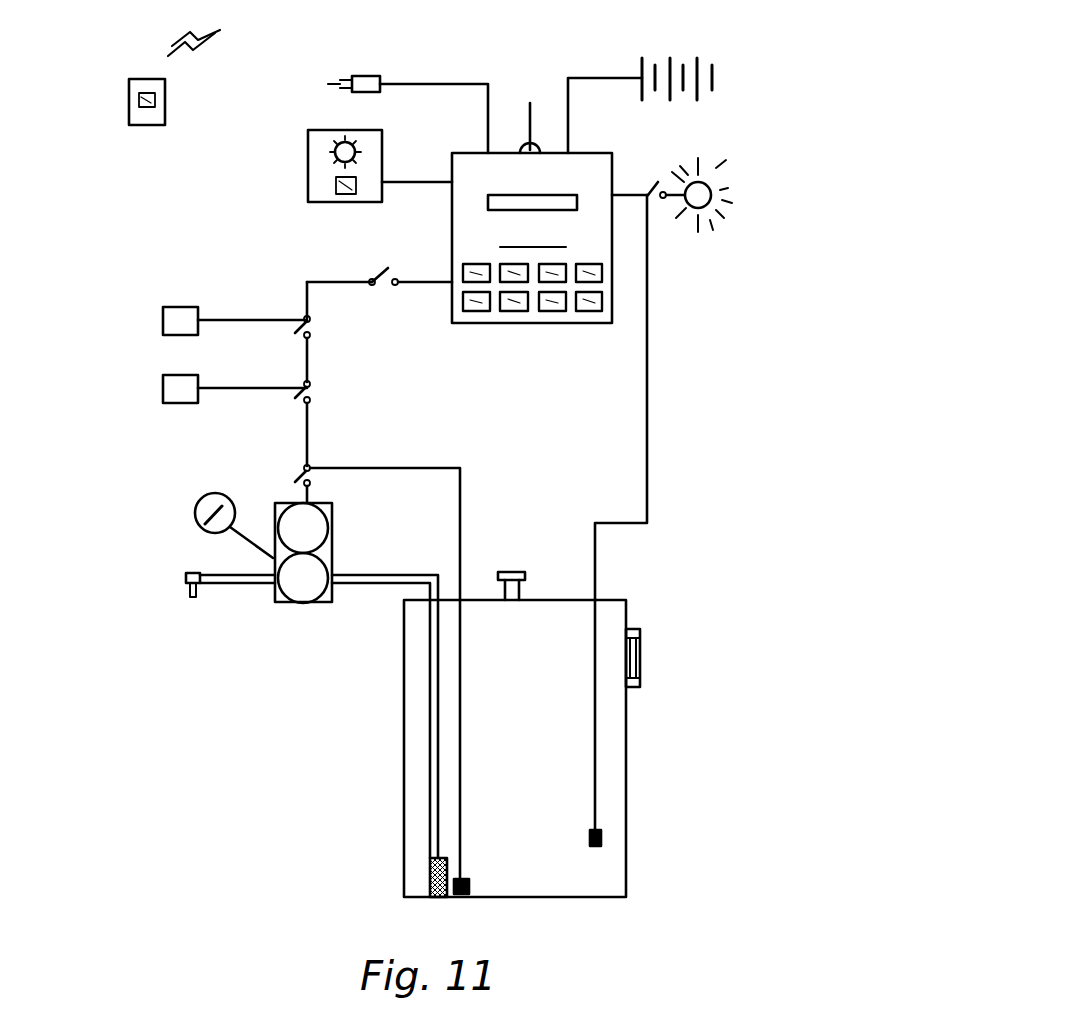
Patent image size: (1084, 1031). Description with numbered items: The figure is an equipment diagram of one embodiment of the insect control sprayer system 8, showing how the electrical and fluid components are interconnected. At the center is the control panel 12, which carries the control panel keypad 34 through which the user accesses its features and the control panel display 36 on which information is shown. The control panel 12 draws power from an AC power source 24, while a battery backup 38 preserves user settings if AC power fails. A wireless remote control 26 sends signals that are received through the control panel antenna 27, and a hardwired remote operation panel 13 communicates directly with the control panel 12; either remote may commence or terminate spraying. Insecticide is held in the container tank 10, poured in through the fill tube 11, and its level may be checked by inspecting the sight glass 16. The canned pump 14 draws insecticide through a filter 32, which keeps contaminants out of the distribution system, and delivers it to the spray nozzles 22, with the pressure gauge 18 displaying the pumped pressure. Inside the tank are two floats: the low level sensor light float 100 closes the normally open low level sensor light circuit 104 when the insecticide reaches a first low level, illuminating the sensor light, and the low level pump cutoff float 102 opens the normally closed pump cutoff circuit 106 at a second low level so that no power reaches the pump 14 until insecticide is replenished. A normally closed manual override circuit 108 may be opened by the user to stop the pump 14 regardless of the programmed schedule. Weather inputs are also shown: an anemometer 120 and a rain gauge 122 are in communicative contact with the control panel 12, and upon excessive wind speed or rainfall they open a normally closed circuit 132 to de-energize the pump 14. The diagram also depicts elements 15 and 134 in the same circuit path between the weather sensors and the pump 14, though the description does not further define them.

The insect control sprayer system 8 is at (840, 98).
The container tank 10 is at (540, 769).
The fill tube 11 is at (514, 571).
The control panel 12 is at (523, 317).
The hardwired remote operation panel 13 is at (296, 172).
The canned pump 14 is at (323, 568).
The fill line 15 is at (525, 578).
The sight glass 16 is at (712, 658).
The pressure gauge 18 is at (174, 525).
The spray nozzles 22 is at (291, 715).
The AC power source 24 is at (394, 99).
The wireless remote control 26 is at (100, 108).
The control panel antenna 27 is at (530, 100).
The filter 32 is at (420, 873).
The control panel keypad 34 is at (797, 195).
The control panel display 36 is at (540, 189).
The battery backup 38 is at (668, 79).
The low level sensor light float 100 is at (610, 836).
The low level pump cutoff float 102 is at (480, 884).
The low level sensor light circuit 104 is at (650, 180).
The pump cutoff circuit 106 is at (320, 480).
The manual override circuit 108 is at (365, 262).
The anemometer 120 is at (204, 389).
The rain gauge 122 is at (204, 321).
The normally closed circuit 132 is at (320, 396).
The remote mode switch 134 is at (320, 330).